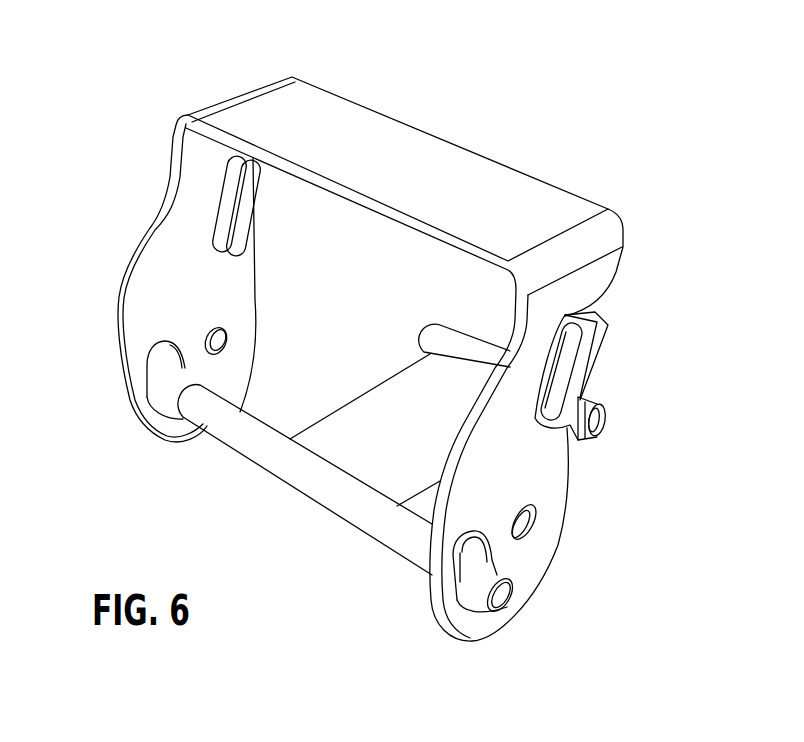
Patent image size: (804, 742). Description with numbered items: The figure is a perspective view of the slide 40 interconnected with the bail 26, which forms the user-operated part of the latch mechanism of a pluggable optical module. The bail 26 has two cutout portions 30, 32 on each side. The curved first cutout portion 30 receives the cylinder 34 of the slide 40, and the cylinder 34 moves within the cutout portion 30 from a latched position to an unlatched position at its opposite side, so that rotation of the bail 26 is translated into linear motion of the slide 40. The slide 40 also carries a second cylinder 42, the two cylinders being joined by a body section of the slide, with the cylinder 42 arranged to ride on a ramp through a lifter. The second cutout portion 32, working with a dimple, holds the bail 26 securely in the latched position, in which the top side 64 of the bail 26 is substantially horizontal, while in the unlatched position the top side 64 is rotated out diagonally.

The bail 26 is at (235, 97).
The top side 64 is at (407, 144).
The slide 40 is at (365, 342).
The cutout portion 30 is at (473, 616).
The cylinder 34 is at (500, 598).
The cutout portion 32 is at (549, 428).
The cylinder 42 is at (600, 432).